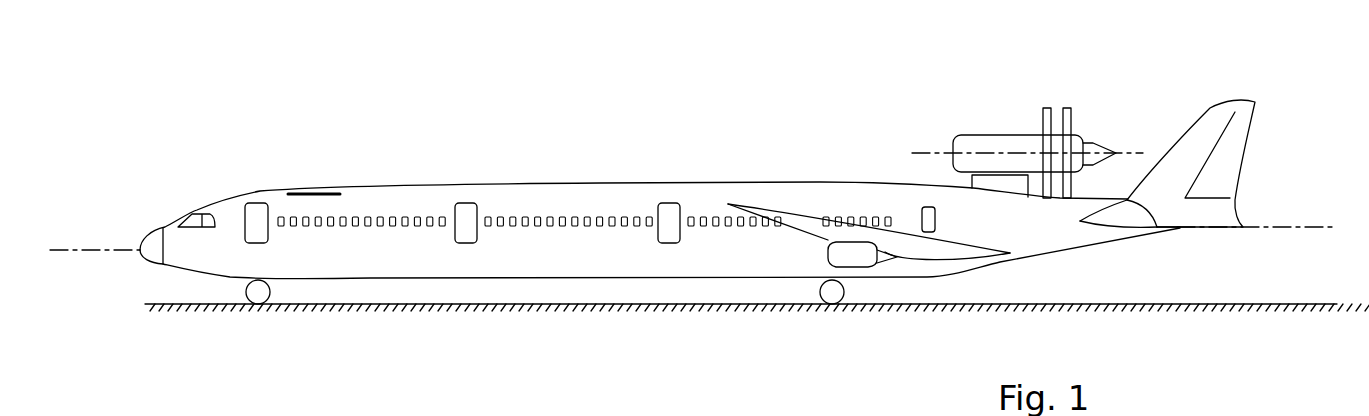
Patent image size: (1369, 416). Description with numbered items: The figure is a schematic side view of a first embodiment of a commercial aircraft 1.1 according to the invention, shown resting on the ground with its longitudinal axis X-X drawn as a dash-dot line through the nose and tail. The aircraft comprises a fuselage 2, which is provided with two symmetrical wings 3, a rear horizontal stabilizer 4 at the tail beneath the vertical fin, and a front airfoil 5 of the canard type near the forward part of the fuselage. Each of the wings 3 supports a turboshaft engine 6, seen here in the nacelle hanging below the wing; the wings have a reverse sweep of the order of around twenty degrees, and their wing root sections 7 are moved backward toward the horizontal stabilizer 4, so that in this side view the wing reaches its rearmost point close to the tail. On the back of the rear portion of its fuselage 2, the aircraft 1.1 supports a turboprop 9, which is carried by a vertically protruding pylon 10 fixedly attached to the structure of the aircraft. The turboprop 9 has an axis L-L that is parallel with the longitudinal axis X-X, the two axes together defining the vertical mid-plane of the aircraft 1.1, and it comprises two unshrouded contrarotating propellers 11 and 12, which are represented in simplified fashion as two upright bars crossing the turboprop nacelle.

The commercial aircraft 1.1 is at (460, 139).
The fuselage 2 is at (597, 192).
The wings 3 is at (897, 248).
The rear horizontal stabilizer 4 is at (1130, 202).
The front airfoil 5 is at (313, 192).
The turboshaft engine 6 is at (838, 255).
The wing root sections 7 is at (947, 252).
The turboprop 9 is at (998, 142).
The pylon 10 is at (993, 182).
The unshrouded contrarotating propeller 11 is at (1047, 108).
The unshrouded contrarotating propeller 12 is at (1067, 108).